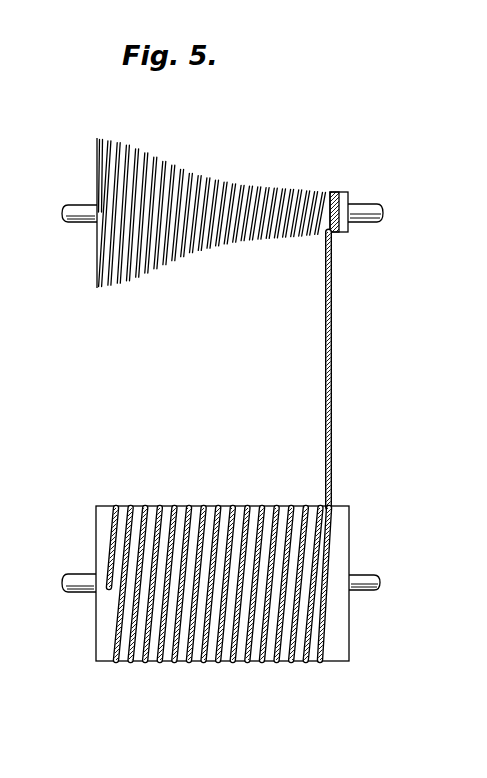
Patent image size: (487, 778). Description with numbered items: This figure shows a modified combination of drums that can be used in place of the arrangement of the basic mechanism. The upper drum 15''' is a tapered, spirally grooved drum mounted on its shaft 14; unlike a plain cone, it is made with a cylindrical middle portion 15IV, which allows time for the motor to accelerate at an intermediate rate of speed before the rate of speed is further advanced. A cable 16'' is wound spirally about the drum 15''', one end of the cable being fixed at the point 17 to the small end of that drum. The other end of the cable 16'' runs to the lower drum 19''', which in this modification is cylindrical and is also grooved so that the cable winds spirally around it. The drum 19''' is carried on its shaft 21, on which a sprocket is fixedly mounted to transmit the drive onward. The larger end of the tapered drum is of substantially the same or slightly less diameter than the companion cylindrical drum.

The drum 15''' is at (227, 210).
The cylindrical middle portion 15IV is at (232, 168).
The point 17 is at (345, 204).
The shaft 14 is at (383, 206).
The cable 16'' is at (354, 369).
The drum 19''' is at (219, 563).
The shaft 21 is at (366, 576).